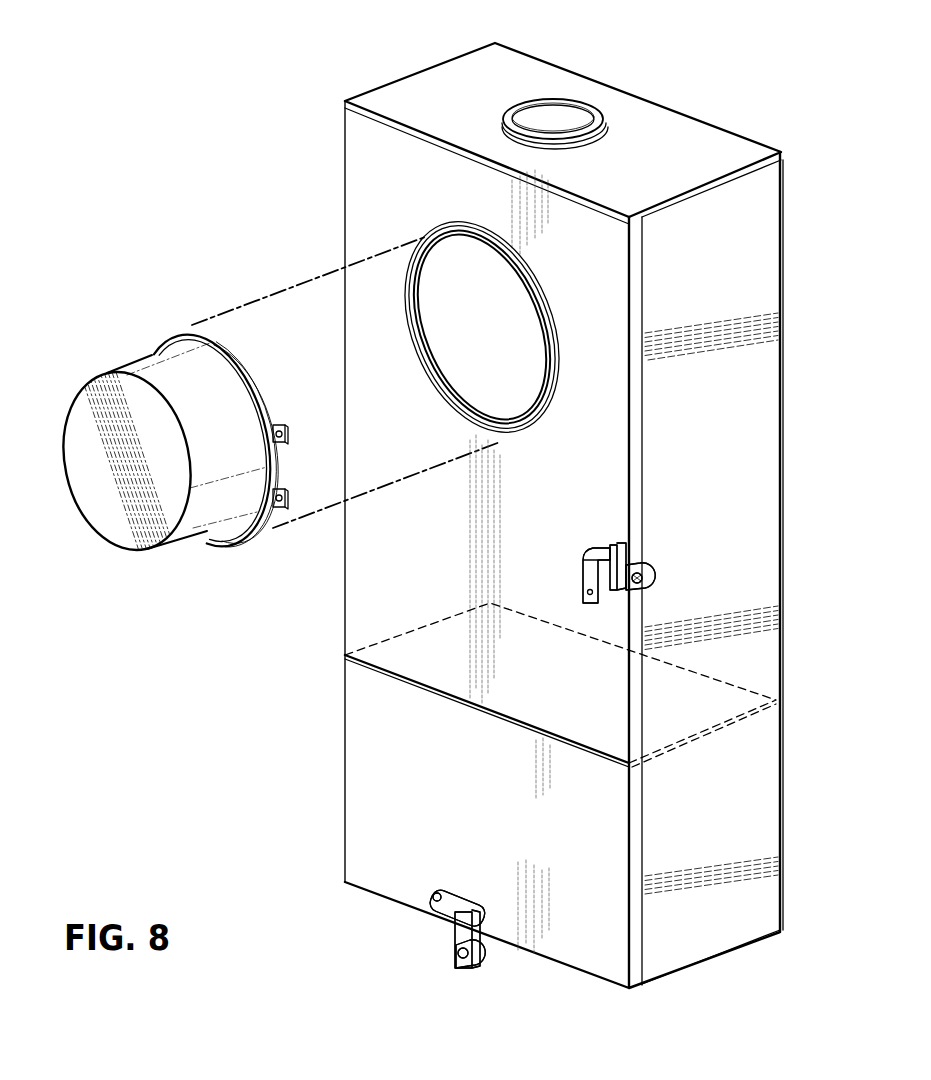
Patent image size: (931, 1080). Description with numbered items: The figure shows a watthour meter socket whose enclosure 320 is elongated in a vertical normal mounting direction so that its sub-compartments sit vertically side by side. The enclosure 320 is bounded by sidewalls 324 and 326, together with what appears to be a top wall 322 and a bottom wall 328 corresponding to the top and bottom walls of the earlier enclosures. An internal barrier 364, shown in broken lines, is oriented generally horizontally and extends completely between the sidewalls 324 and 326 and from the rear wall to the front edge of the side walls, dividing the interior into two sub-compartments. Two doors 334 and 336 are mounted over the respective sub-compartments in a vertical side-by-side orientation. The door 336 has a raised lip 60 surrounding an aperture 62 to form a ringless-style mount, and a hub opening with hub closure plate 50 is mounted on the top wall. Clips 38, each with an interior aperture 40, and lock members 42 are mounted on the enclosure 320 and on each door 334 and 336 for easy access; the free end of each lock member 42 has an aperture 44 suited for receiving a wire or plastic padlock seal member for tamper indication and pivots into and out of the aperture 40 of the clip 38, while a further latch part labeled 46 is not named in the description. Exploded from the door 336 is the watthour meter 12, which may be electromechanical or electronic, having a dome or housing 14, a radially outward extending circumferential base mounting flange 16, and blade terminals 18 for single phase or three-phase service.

The watthour meter 12 is at (173, 426).
The dome or housing 14 is at (92, 493).
The base mounting flange 16 is at (233, 362).
The blade terminals 18 is at (285, 425).
The clips 38 is at (612, 560).
The interior aperture 40 is at (633, 560).
The lock member 42 is at (440, 903).
The aperture 44 is at (588, 580).
The fastener loop 46 is at (650, 573).
The hub closure plate 50 is at (560, 118).
The raised lip 60 is at (543, 418).
The aperture 62 is at (540, 318).
The enclosure 320 is at (531, 92).
The top panel 322 is at (647, 118).
The sidewall 324 is at (347, 572).
The sidewall 326 is at (763, 508).
The bottom panel 328 is at (720, 957).
The door 334 is at (405, 793).
The door 336 is at (607, 263).
The internal barrier 364 is at (708, 732).